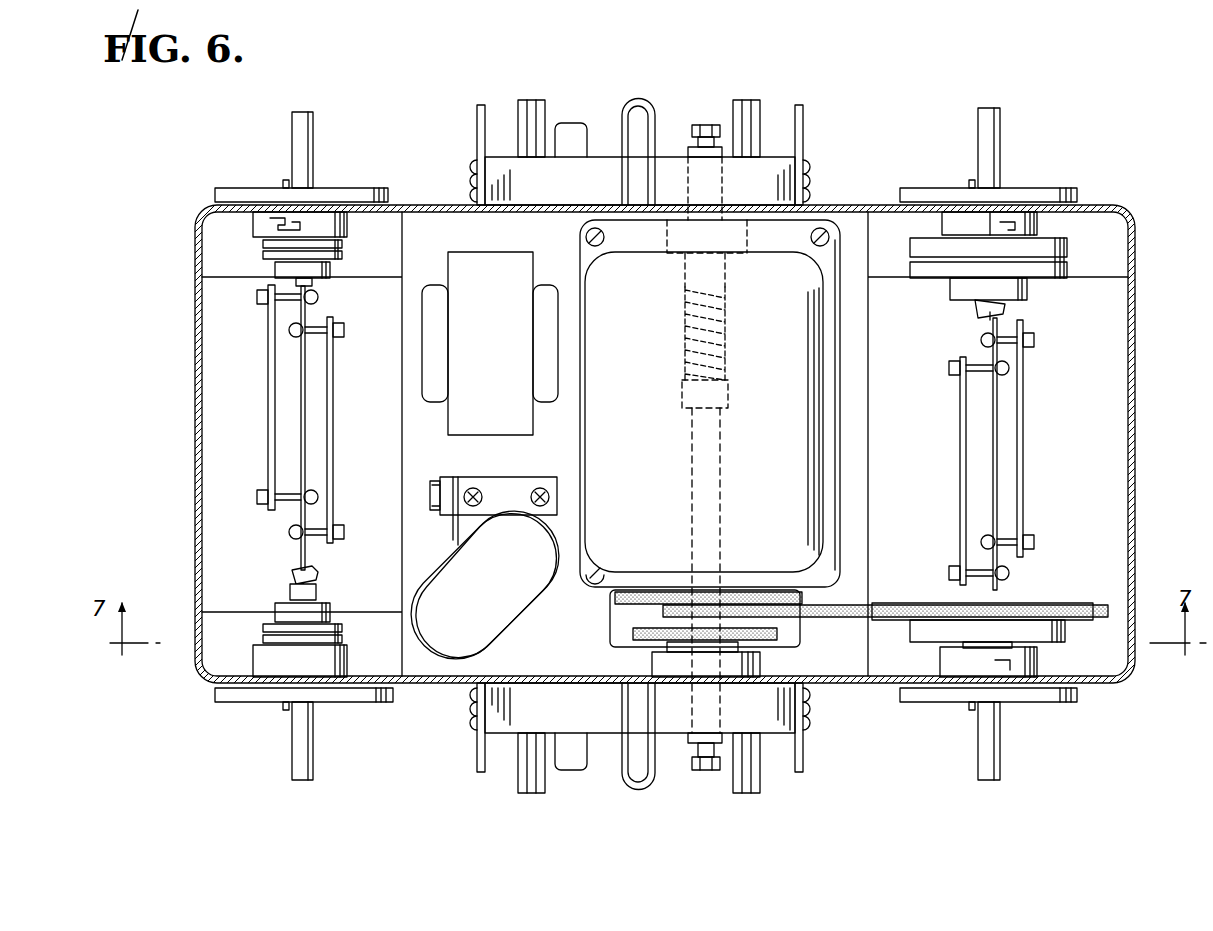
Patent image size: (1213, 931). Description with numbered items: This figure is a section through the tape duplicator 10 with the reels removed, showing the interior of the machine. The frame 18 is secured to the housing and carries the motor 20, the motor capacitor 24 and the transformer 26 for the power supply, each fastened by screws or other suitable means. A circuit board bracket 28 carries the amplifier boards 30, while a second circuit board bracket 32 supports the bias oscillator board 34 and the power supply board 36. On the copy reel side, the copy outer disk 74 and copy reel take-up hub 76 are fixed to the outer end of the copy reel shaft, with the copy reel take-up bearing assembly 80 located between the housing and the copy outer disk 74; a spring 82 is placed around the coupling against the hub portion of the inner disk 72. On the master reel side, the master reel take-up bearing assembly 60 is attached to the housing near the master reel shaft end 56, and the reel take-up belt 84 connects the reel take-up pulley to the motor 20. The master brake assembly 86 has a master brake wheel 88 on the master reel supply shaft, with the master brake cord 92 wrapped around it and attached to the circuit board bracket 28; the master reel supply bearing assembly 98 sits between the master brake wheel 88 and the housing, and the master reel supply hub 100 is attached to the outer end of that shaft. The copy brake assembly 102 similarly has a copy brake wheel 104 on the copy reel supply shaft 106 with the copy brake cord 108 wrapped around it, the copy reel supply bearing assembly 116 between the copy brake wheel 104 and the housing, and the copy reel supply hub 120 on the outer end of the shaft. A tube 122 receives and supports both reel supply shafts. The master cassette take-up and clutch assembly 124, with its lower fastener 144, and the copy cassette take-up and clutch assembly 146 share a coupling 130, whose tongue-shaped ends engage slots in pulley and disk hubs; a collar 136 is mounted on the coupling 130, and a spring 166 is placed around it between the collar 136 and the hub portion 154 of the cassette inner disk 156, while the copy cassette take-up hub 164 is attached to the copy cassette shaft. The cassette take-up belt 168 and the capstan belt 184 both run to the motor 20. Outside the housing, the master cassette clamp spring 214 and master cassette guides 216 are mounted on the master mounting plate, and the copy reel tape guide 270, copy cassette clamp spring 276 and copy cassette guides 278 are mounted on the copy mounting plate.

The tape duplicator 10 is at (1142, 132).
The frame 18 is at (438, 225).
The motor 20 is at (876, 530).
The motor capacitor 24 is at (485, 568).
The transformer 26 is at (503, 356).
The circuit board bracket 28 is at (300, 382).
The amplifier boards 30 is at (268, 455).
The circuit board bracket 32 is at (998, 430).
The bias oscillator board 34 is at (960, 478).
The power supply board 36 is at (1023, 508).
The output shaft 56 is at (990, 780).
The master reel take-up bearing assembly 60 is at (1040, 665).
The inner disk 72 is at (936, 280).
The copy outer disk 74 is at (920, 248).
The copy reel take-up hub 76 is at (992, 138).
The copy reel take-up bearing assembly 80 is at (1030, 225).
The spring 82 is at (1008, 312).
The reel take-up belt 84 is at (850, 612).
The master brake assembly 86 is at (240, 655).
The master brake wheel 88 is at (265, 622).
The master brake cord 92 is at (342, 630).
The master reel supply bearing assembly 98 is at (370, 702).
The master reel supply hub 100 is at (298, 742).
The copy brake assembly 102 is at (235, 226).
The copy brake wheel 104 is at (345, 247).
The copy reel supply shaft 106 is at (311, 285).
The copy brake cord 108 is at (262, 262).
The copy reel supply bearing assembly 116 is at (345, 200).
The copy reel supply hub 120 is at (298, 153).
The tube 122 is at (292, 585).
The master cassette take-up and clutch assembly 124 is at (722, 812).
The coupling 130 is at (694, 453).
The collar 136 is at (728, 396).
The bolt 144 is at (698, 772).
The copy cassette take-up and clutch assembly 146 is at (745, 72).
The hub portion 154 is at (728, 262).
The cassette inner disk 156 is at (672, 240).
The copy cassette take-up hub 164 is at (706, 125).
The spring 166 is at (683, 353).
The cassette take-up belt 168 is at (778, 636).
The capstan belt 184 is at (650, 592).
The master cassette clamp spring 214 is at (632, 795).
The master cassette guides 216 is at (527, 795).
The copy reel tape guide 270 is at (604, 98).
The copy cassette clamp spring 276 is at (624, 98).
The copy cassette guides 278 is at (528, 100).